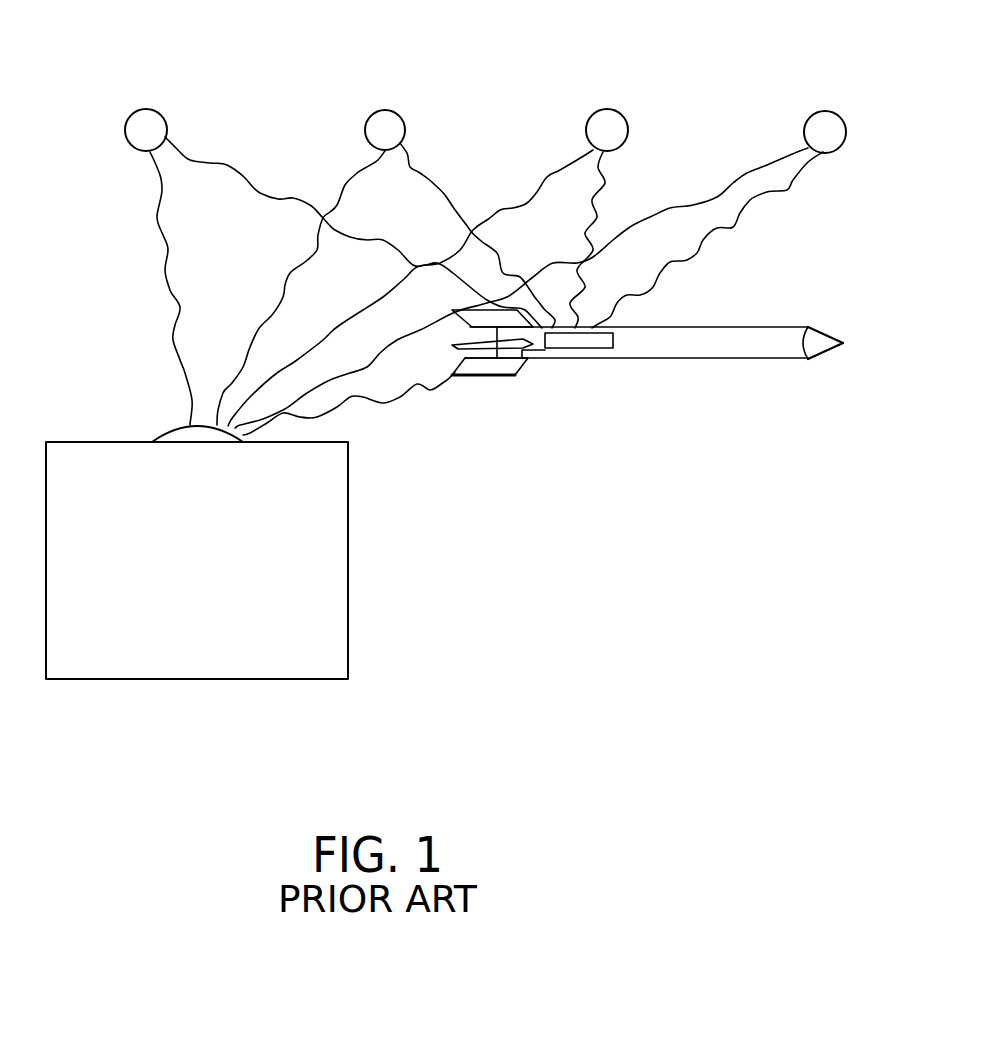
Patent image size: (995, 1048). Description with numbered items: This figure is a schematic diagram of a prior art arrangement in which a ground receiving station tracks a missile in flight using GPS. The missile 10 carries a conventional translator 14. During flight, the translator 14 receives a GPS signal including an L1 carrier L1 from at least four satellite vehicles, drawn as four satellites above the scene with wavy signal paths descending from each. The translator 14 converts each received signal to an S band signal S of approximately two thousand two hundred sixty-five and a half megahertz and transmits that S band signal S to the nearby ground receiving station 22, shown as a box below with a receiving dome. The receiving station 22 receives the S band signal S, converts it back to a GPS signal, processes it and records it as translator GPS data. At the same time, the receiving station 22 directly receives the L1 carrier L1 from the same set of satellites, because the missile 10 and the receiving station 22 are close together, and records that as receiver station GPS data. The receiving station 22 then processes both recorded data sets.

The missile 10 is at (733, 359).
The translator 14 is at (602, 358).
The ground receiving station 22 is at (323, 679).
The L1 carrier L1 is at (487, 279).
The S band signal S is at (349, 403).